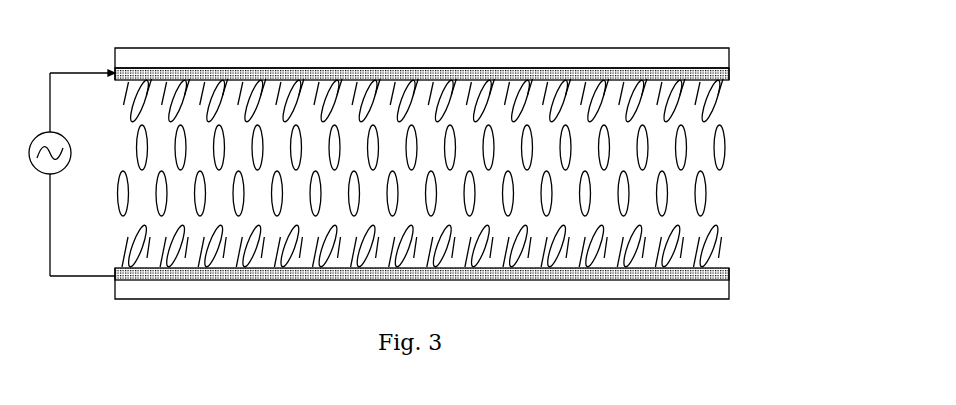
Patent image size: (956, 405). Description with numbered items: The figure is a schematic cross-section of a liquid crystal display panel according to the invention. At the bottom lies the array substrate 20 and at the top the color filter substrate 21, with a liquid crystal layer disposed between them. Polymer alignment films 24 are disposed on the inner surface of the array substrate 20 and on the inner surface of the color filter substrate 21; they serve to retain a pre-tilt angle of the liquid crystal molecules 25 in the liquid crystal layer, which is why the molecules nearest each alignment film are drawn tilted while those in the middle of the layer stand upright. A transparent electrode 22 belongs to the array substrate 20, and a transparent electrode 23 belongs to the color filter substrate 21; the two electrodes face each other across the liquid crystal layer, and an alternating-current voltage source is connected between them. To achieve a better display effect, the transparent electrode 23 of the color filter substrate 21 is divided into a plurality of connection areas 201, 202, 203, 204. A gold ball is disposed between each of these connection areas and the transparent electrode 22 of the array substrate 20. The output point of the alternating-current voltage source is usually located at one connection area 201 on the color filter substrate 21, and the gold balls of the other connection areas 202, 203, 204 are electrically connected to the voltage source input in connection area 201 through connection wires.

The array substrate 20 is at (730, 283).
The color filter substrate 21 is at (730, 56).
The transparent electrode of the array substrate 22 is at (730, 270).
The transparent electrode of the color filter substrate 23 is at (730, 70).
The polymer alignment film 24 is at (722, 98).
The liquid crystal molecule 25 is at (728, 148).
The connection area 201 is at (198, 68).
The connection area 202 is at (332, 68).
The connection area 203 is at (490, 68).
The connection area 204 is at (612, 68).